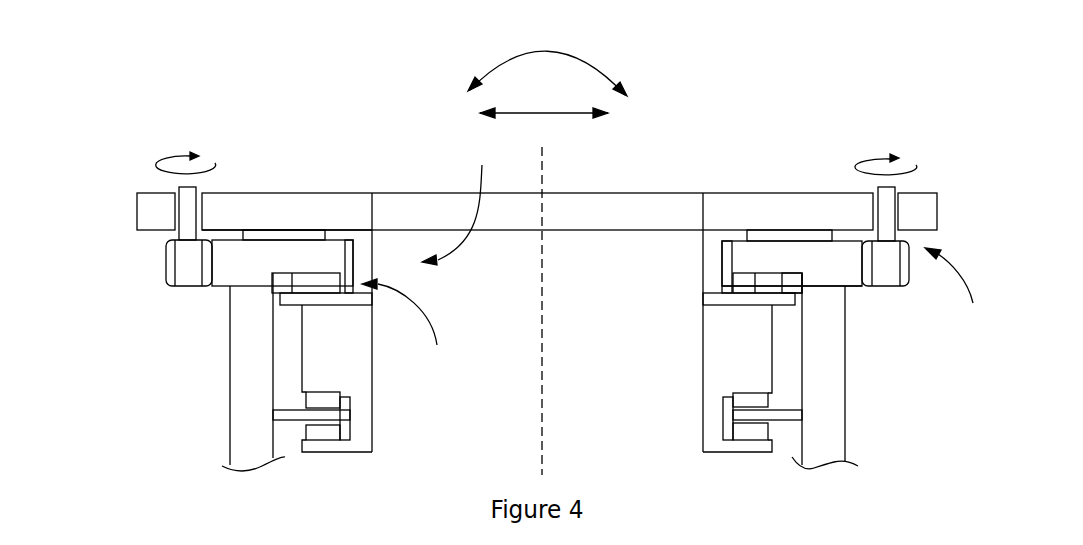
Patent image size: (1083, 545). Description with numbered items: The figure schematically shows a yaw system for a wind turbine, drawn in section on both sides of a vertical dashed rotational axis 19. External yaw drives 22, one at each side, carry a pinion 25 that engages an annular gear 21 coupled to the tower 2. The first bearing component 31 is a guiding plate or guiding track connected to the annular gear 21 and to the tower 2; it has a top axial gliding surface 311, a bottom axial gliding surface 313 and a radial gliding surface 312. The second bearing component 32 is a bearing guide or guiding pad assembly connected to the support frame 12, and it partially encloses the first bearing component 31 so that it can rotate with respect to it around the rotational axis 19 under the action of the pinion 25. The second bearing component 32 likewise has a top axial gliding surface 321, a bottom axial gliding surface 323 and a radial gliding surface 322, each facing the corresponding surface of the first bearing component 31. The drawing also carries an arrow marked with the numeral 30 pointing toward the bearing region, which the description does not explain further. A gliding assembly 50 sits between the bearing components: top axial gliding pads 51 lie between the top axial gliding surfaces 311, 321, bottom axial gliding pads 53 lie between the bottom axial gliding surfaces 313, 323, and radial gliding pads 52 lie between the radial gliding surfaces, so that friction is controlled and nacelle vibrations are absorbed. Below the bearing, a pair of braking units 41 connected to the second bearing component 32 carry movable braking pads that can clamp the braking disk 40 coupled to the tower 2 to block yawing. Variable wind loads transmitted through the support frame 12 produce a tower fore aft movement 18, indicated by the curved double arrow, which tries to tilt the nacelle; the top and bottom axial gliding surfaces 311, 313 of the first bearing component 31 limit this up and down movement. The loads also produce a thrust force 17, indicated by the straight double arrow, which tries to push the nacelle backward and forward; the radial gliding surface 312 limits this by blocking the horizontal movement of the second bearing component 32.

The tower 2 is at (832, 423).
The support frame 12 is at (625, 215).
The thrust force 17 is at (523, 113).
The tower fore aft movement 18 is at (593, 63).
The rotational axis 19 is at (542, 422).
The annular gear 21 is at (217, 268).
The external yaw drive 22 is at (919, 239).
The pinion 25 is at (172, 260).
The first carrier 30 is at (430, 295).
The first bearing component 31 is at (330, 258).
The second bearing component 32 is at (305, 226).
The braking disk 40 is at (277, 422).
The braking unit 41 is at (710, 412).
The gliding assembly 50 is at (363, 365).
The top axial gliding pad 51 is at (245, 232).
The radial gliding pad 52 is at (355, 260).
The bottom axial gliding pad 53 is at (300, 286).
The top axial gliding surface 311 is at (845, 240).
The radial gliding surface 312 is at (738, 258).
The bottom axial gliding surface 313 is at (755, 293).
The top axial gliding surface 321 is at (747, 236).
The radial gliding surface 322 is at (722, 280).
The bottom axial gliding surface 323 is at (790, 287).